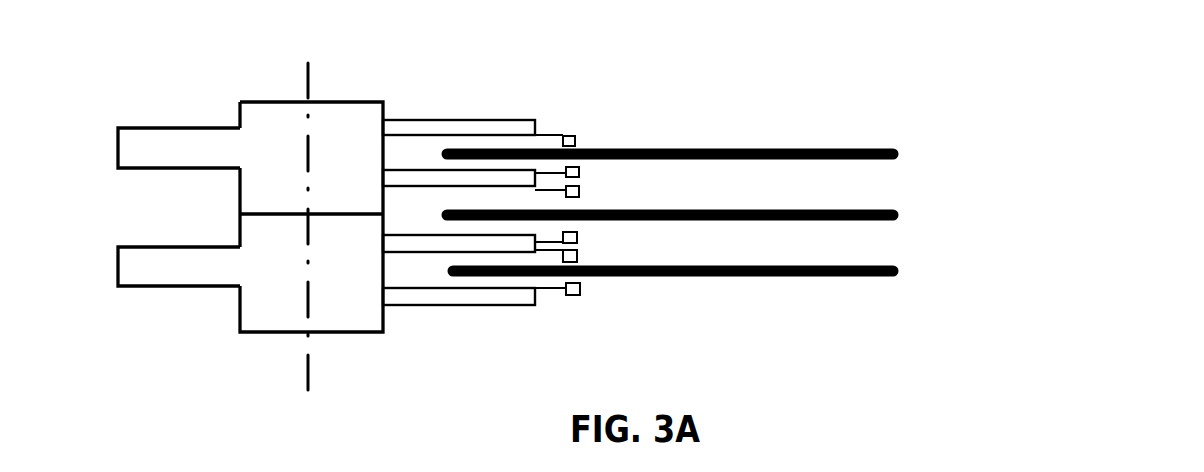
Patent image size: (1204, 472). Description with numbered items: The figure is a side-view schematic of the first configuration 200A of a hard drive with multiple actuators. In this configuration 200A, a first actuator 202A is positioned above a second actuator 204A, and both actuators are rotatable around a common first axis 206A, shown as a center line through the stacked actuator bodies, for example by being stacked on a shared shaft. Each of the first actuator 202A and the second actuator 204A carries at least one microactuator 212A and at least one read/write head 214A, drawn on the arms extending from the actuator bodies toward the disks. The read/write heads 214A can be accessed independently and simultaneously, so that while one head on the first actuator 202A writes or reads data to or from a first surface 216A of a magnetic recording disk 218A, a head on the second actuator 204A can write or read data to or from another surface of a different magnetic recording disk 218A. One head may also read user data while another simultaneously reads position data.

The first configuration 200A is at (515, 48).
The first actuator 202A is at (192, 128).
The second actuator 204A is at (178, 286).
The first axis 206A is at (307, 381).
The microactuator 212A is at (542, 133).
The read/write head 214A is at (572, 133).
The first surface 216A is at (833, 148).
The magnetic recording disk 218A is at (730, 185).